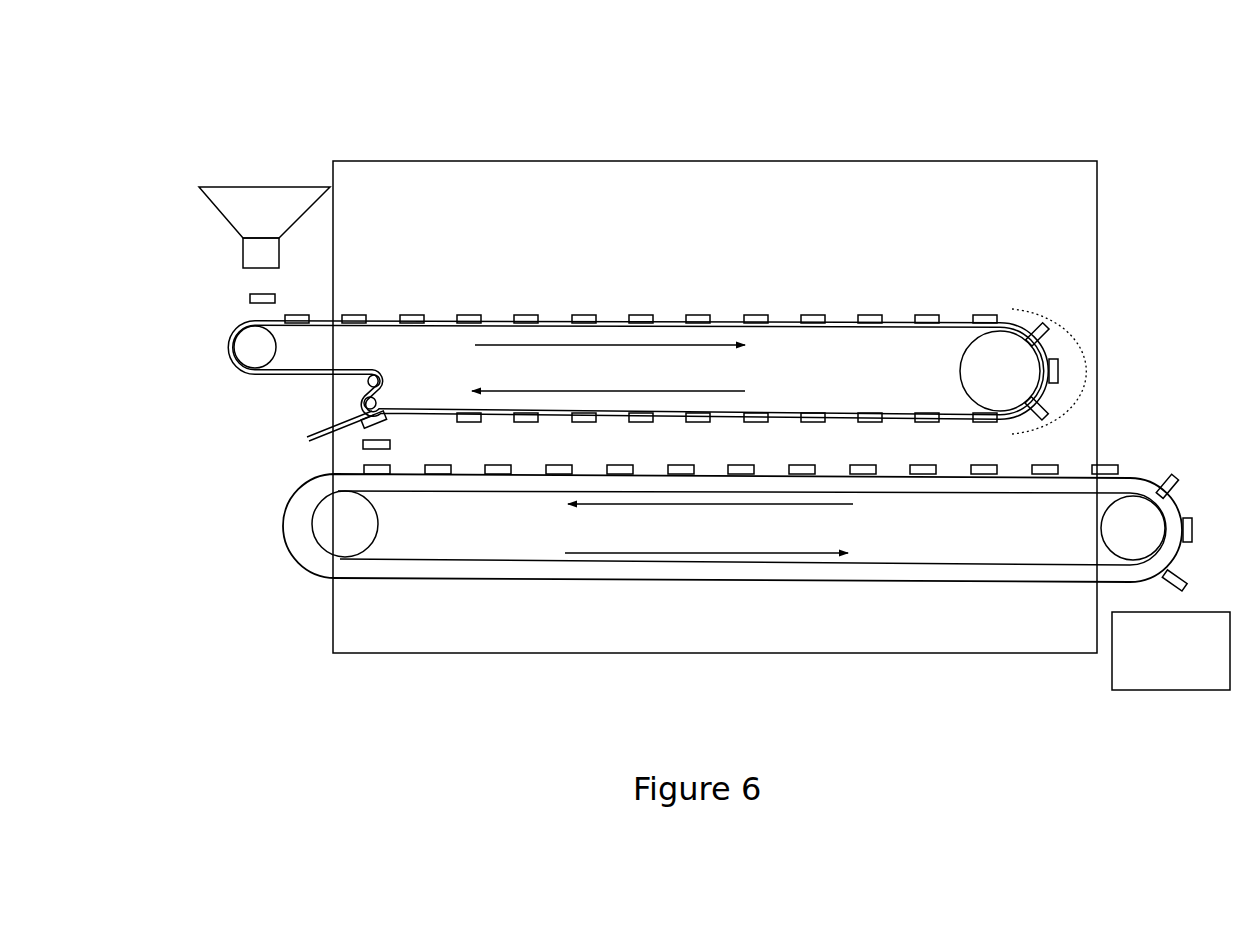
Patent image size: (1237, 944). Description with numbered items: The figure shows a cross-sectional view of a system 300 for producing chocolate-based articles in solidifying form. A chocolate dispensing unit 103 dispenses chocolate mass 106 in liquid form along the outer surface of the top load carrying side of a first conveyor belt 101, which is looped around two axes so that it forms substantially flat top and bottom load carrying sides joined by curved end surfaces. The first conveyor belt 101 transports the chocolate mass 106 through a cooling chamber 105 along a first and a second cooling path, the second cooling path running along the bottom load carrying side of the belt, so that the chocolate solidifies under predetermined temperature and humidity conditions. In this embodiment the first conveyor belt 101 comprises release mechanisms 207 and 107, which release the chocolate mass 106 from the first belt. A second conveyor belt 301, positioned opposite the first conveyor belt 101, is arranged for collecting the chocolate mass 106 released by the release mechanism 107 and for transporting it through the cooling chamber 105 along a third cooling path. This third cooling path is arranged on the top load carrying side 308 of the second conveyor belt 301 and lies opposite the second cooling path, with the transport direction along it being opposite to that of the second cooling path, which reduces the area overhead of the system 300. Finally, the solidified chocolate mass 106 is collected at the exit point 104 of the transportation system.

The system 300 is at (1057, 104).
The first conveyor belt 101 is at (882, 305).
The chocolate dispensing unit 103 is at (259, 190).
The exit point 104 is at (1149, 667).
The cooling chamber 105 is at (415, 207).
The chocolate mass 106 is at (757, 279).
The release mechanism 107 is at (315, 438).
The release mechanism 207 is at (352, 387).
The second conveyor belt 301 is at (863, 567).
The top load carrying side 308 is at (1077, 476).